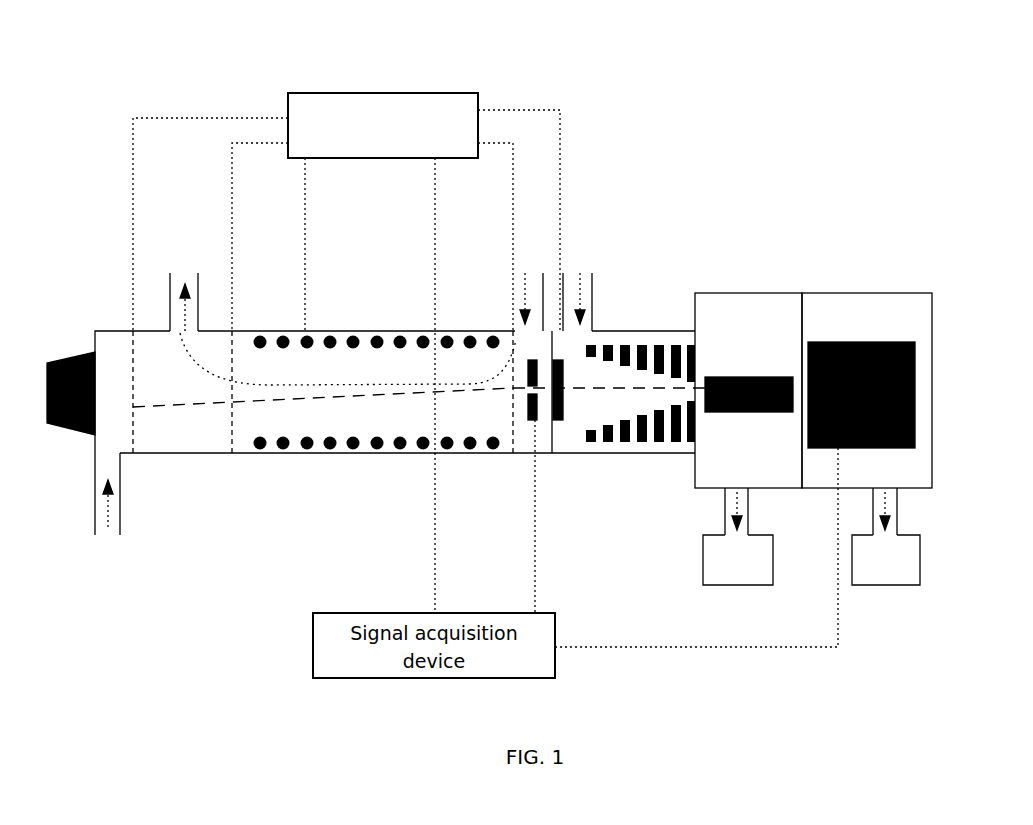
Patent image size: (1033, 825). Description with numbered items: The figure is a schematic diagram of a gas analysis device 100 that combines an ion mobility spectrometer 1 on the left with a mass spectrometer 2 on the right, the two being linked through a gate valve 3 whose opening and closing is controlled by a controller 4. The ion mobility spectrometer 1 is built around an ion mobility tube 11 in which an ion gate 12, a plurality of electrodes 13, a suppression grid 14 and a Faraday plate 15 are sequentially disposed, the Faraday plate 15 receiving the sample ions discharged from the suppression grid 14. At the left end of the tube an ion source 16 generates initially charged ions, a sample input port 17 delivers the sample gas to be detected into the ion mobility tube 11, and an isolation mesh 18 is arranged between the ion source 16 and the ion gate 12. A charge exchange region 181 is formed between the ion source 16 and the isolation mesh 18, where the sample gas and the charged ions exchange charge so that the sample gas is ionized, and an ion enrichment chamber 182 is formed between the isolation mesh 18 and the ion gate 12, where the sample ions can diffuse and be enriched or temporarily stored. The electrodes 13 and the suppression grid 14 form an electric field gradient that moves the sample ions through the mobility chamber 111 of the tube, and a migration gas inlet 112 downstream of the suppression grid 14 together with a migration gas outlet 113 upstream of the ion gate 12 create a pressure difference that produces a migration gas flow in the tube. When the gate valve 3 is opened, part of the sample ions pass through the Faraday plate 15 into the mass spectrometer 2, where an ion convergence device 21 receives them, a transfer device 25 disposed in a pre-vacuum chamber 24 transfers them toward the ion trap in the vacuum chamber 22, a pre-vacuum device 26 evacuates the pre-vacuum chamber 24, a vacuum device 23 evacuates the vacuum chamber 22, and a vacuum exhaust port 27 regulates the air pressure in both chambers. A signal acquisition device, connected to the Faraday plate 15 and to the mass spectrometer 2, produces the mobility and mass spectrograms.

The gas analysis device 100 is at (478, 66).
The ion mobility spectrometer 1 is at (376, 414).
The mass spectrometer 2 is at (793, 405).
The gate valve 3 is at (572, 412).
The controller 4 is at (300, 93).
The ion mobility tube 11 is at (293, 455).
The ion gate 12 is at (243, 425).
The electrodes 13 is at (340, 455).
The suppression grid 14 is at (535, 425).
The Faraday plate 15 is at (558, 425).
The ion source 16 is at (52, 353).
The sample input port 17 is at (122, 487).
The isolation mesh 18 is at (165, 453).
The ion convergence device 21 is at (645, 435).
The vacuum chamber 22 is at (878, 335).
The vacuum device 23 is at (889, 563).
The pre-vacuum chamber 24 is at (730, 343).
The transfer device 25 is at (770, 390).
The pre-vacuum device 26 is at (753, 568).
The vacuum exhaust port 27 is at (580, 275).
The mobility chamber 111 is at (299, 366).
The migration gas inlet 112 is at (535, 278).
The migration gas outlet 113 is at (175, 282).
The charge exchange region 181 is at (103, 433).
The ion enrichment chamber 182 is at (156, 364).